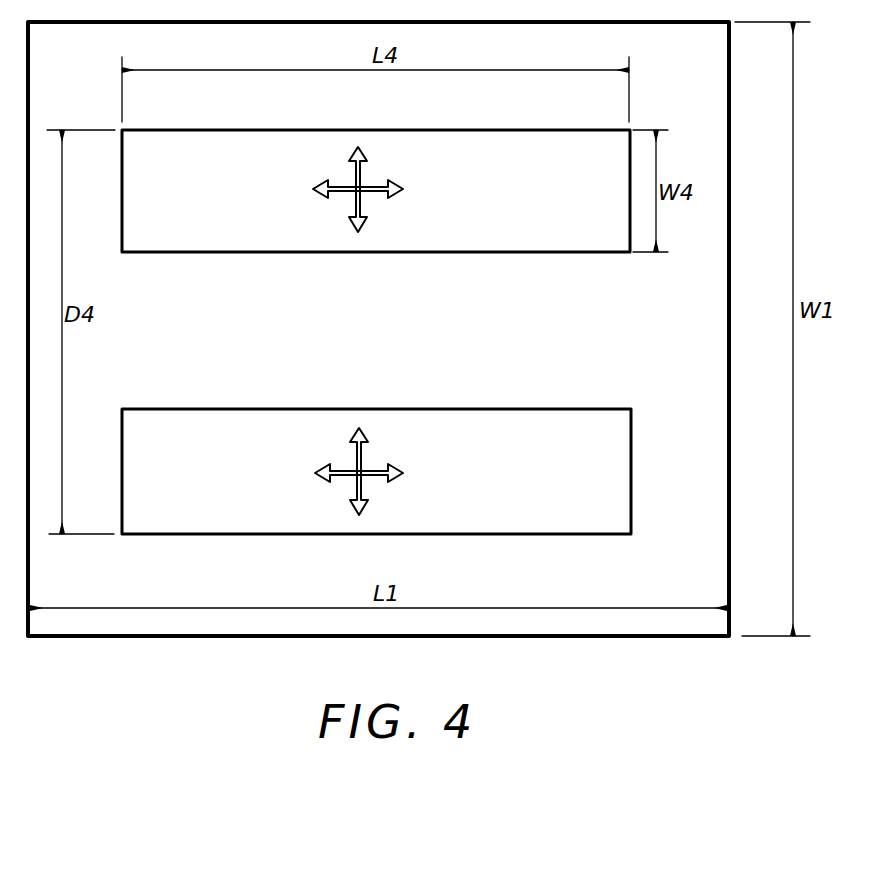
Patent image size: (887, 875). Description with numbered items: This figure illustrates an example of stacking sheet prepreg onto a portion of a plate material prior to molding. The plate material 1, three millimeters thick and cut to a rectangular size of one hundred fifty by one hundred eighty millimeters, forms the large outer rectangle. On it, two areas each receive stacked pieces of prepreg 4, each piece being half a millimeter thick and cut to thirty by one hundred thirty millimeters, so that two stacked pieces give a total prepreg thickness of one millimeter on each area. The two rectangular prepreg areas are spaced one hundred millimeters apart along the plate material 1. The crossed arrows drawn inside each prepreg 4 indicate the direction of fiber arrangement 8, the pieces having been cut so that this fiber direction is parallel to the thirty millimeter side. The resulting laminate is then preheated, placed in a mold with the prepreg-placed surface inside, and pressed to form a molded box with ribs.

The plate material 1 is at (708, 117).
The prepreg piece 4 is at (592, 236).
The direction of fiber arrangement 8 is at (352, 177).